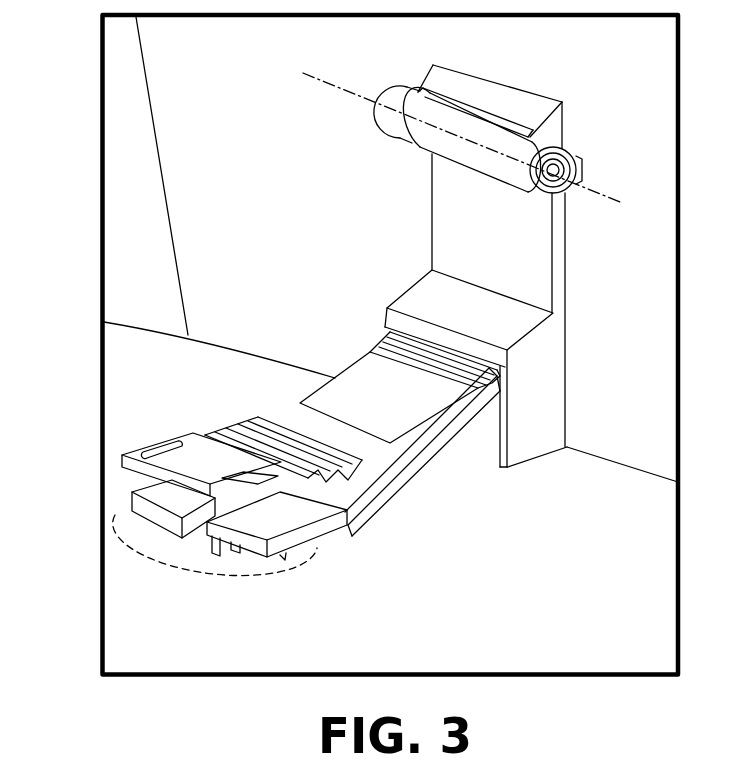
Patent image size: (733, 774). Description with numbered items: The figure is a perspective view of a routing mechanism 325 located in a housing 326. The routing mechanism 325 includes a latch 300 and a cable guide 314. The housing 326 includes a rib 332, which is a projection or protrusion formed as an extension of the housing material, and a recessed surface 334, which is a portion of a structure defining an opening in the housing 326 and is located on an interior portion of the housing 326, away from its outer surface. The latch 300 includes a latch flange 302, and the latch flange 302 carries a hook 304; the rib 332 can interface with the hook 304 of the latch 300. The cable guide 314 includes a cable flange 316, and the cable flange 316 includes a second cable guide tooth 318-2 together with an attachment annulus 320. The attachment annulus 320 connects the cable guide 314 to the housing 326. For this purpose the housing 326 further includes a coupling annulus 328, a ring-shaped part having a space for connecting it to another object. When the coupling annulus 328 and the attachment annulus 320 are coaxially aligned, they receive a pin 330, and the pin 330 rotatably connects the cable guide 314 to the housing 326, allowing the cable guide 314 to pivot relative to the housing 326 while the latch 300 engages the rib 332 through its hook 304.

The latch 300 is at (425, 443).
The latch flange 302 is at (400, 490).
The hook 304 is at (115, 492).
The cable guide 314 is at (347, 382).
The cable flange 316 is at (300, 403).
The second cable guide tooth 318-2 is at (346, 495).
The attachment annulus 320 is at (460, 122).
The routing mechanism 325 is at (232, 283).
The housing 326 is at (140, 156).
The coupling annulus 328 is at (397, 100).
The pin 330 is at (553, 147).
The rib 332 is at (280, 557).
The recessed surface 334 is at (385, 303).